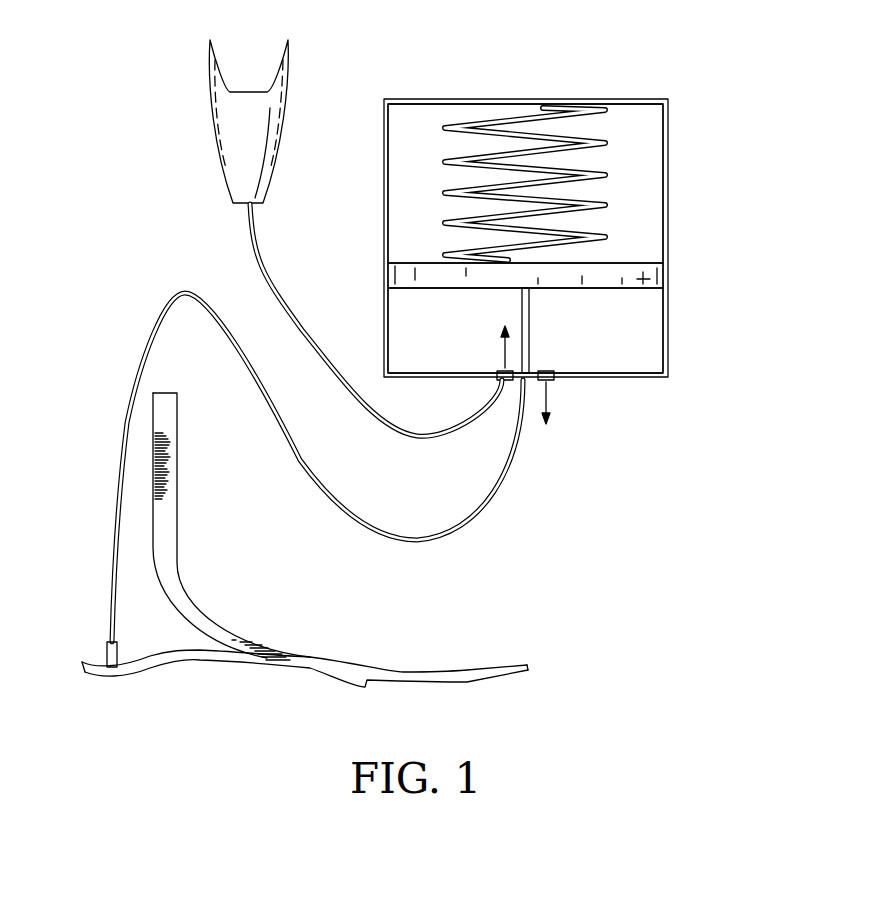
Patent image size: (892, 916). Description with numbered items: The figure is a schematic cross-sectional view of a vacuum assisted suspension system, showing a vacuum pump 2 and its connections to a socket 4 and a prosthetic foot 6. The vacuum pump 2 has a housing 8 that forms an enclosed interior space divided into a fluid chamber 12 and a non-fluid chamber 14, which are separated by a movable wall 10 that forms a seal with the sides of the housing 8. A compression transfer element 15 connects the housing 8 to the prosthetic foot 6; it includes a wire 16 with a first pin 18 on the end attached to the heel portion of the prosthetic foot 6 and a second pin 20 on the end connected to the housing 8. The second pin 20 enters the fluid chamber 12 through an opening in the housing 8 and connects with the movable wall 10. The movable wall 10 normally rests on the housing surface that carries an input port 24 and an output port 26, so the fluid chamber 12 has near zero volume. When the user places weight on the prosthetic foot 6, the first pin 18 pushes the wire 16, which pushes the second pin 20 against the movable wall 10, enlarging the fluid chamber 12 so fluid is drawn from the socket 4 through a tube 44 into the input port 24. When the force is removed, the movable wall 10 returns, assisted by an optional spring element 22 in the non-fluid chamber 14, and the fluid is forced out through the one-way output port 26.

The vacuum pump 2 is at (615, 87).
The socket 4 is at (228, 125).
The prosthetic foot 6 is at (207, 612).
The housing 8 is at (668, 152).
The movable wall 10 is at (657, 277).
The fluid chamber 12 is at (628, 330).
The non-fluid chamber 14 is at (645, 205).
The compression transfer element 15 is at (110, 416).
The wire 16 is at (155, 325).
The first pin 18 is at (107, 648).
The second pin 20 is at (532, 330).
The spring element 22 is at (497, 118).
The input port 24 is at (495, 383).
The output port 26 is at (555, 383).
The tube 44 is at (248, 238).